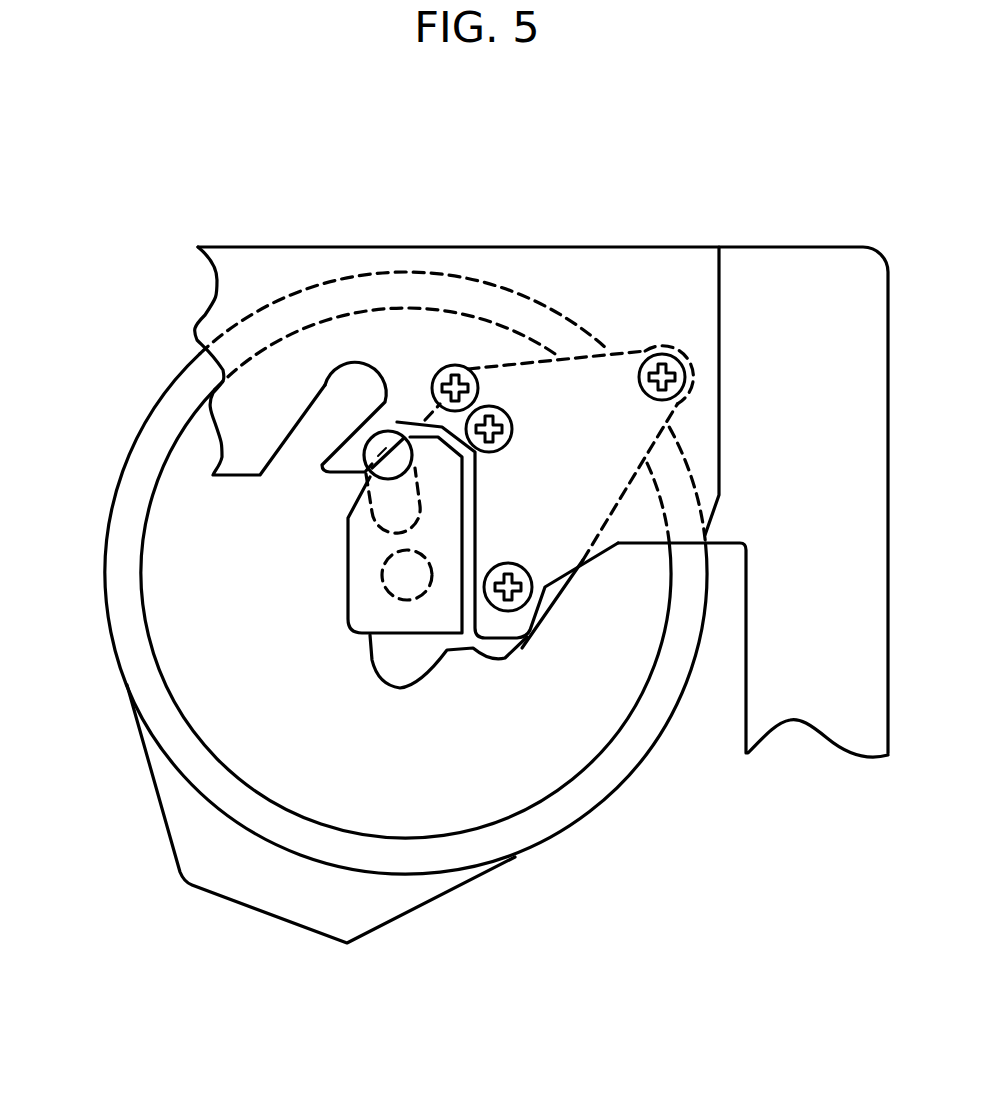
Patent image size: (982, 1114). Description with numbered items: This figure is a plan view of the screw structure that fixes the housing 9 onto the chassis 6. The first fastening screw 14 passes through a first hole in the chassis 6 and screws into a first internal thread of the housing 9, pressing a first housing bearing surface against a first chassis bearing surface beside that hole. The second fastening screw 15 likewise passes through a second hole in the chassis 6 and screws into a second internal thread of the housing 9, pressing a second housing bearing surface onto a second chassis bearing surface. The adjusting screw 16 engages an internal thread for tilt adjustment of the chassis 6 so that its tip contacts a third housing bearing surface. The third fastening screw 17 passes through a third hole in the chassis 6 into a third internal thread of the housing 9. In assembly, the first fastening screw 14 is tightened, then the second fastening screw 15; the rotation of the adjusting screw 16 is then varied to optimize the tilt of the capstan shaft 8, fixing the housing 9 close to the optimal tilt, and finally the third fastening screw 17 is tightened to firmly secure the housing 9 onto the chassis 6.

The chassis 6 is at (273, 247).
The capstan shaft 8 is at (400, 582).
The housing 9 is at (425, 618).
The first fastening screw 14 is at (670, 352).
The second fastening screw 15 is at (523, 607).
The adjusting screw 16 is at (450, 366).
The third fastening screw 17 is at (500, 410).